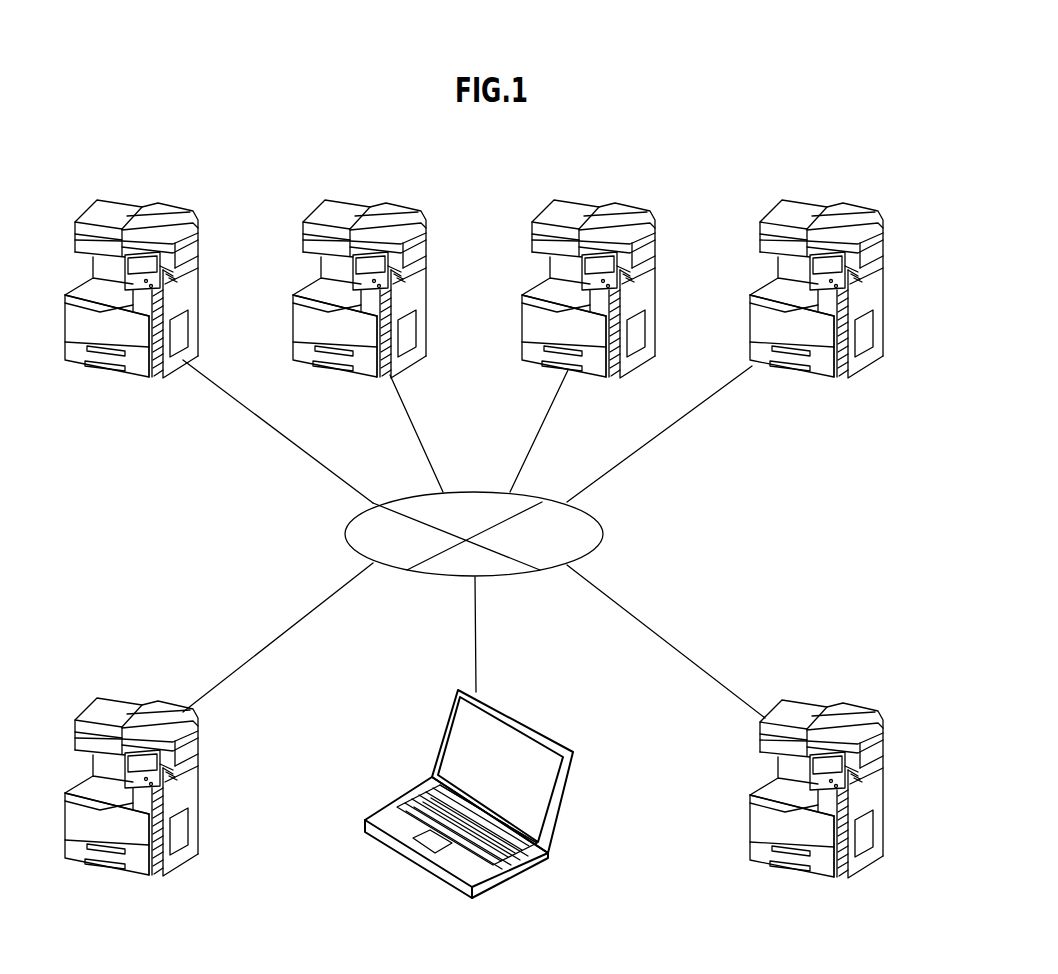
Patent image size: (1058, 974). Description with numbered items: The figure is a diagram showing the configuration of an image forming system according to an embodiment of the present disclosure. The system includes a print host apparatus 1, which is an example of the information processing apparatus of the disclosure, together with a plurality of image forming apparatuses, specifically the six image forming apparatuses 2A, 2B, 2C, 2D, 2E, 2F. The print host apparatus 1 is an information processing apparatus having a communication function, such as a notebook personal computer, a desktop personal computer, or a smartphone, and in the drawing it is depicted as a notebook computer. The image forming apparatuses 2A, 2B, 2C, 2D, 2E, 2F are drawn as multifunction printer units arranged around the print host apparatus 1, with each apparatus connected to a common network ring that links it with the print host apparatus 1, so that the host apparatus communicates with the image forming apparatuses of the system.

The print host apparatus 1 is at (520, 717).
The image forming apparatus 2A is at (160, 212).
The image forming apparatus 2B is at (388, 212).
The image forming apparatus 2C is at (617, 212).
The image forming apparatus 2D is at (845, 212).
The image forming apparatus 2E is at (133, 702).
The image forming apparatus 2F is at (837, 702).